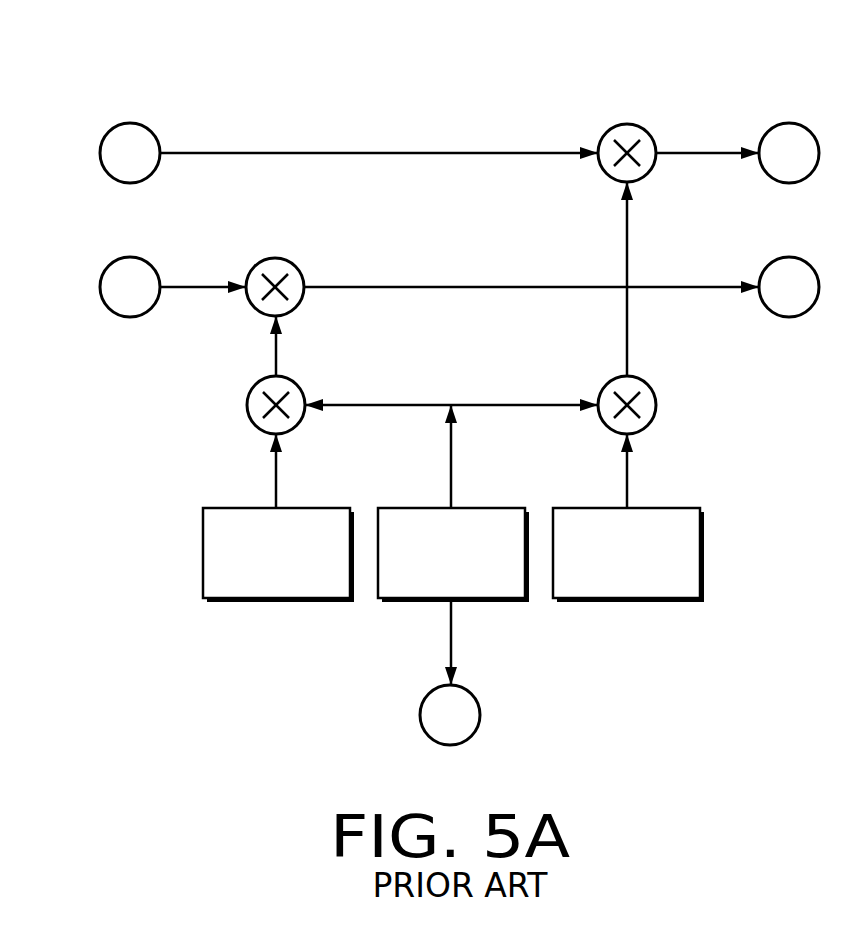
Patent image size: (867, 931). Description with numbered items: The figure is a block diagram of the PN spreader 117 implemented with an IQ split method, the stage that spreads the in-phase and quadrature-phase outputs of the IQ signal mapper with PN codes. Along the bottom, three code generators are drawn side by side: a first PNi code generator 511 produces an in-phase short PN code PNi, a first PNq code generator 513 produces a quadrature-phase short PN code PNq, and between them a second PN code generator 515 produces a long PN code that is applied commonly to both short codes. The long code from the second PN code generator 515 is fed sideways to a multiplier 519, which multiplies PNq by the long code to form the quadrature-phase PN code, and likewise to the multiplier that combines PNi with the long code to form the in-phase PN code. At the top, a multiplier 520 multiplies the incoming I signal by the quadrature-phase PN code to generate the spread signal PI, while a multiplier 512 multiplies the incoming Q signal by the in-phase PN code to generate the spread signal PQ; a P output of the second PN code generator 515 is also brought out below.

The PN spreader 117 is at (840, 49).
The first PNi code generator 511 is at (331, 507).
The multiplier 512 is at (296, 266).
The first PNq code generator 513 is at (681, 507).
The second PN code generator 515 is at (255, 386).
The multiplier 519 is at (648, 385).
The multiplier 520 is at (648, 132).